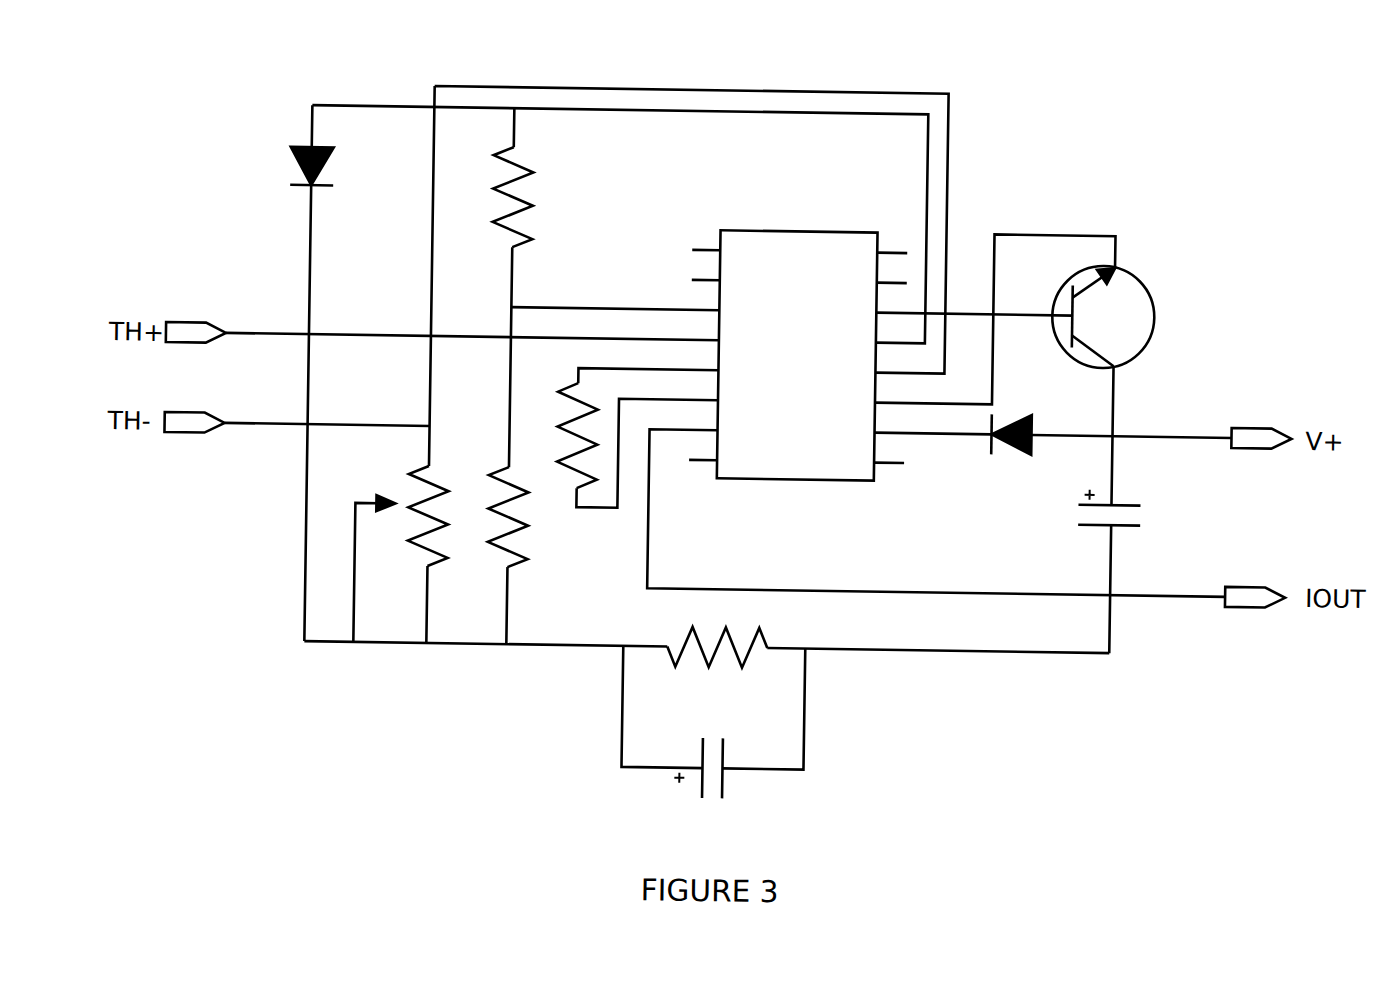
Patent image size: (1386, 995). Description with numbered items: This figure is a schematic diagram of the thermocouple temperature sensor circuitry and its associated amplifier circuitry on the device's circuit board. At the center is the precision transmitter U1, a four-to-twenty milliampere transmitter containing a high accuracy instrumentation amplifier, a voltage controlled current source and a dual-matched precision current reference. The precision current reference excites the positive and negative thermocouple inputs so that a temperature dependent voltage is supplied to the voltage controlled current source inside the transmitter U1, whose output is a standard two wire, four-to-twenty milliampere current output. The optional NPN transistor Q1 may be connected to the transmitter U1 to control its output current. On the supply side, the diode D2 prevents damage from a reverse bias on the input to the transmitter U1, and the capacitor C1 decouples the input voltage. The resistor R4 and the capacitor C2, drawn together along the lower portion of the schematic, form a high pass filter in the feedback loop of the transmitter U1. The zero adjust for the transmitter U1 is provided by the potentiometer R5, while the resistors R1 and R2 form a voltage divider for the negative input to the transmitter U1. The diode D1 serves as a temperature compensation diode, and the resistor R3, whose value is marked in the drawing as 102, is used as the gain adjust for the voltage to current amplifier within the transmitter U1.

The temperature compensation diode D1 is at (291, 164).
The voltage divider resistor R1 is at (518, 197).
The voltage divider resistor R2 is at (509, 517).
The gain adjust resistor R3 is at (619, 433).
The resistor R3 value 102 is at (622, 433).
The feedback loop filter resistor R4 is at (718, 650).
The zero adjust resistor R5 is at (401, 554).
The precision 4-20 mA transmitter U1 is at (804, 356).
The optional NPN transistor Q1 is at (1143, 305).
The reverse bias protection diode D2 is at (1011, 453).
The decoupling capacitor C1 is at (1088, 512).
The feedback loop filter capacitor C2 is at (711, 766).